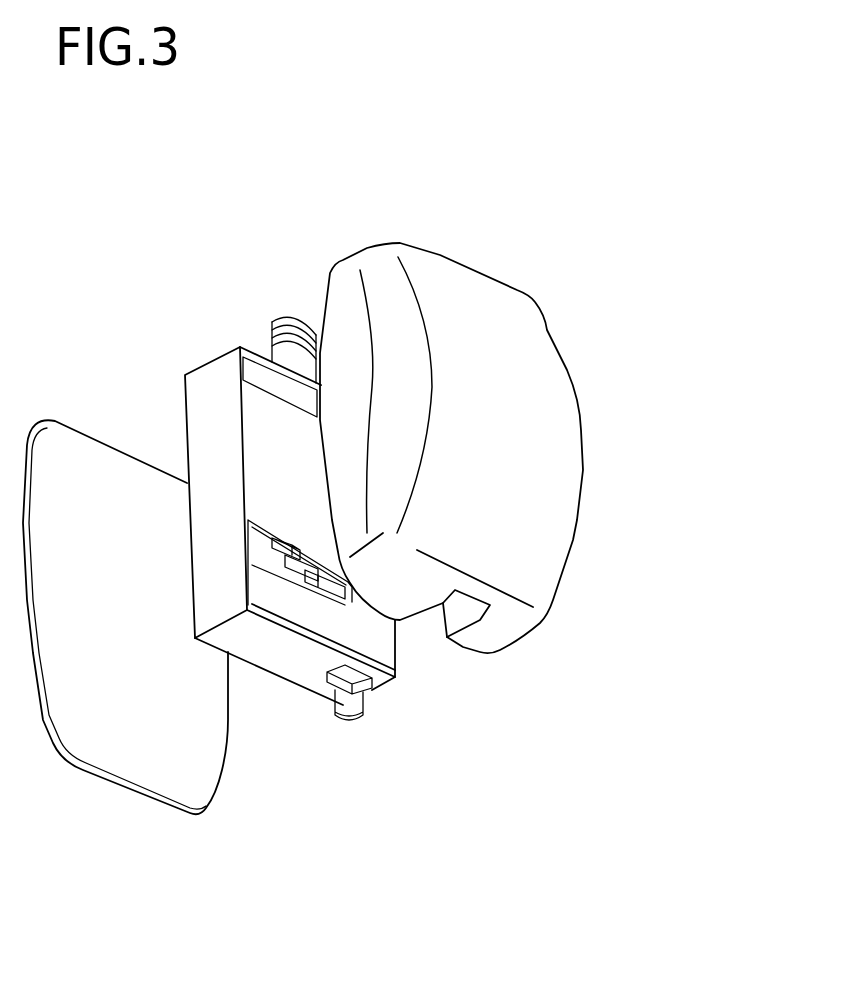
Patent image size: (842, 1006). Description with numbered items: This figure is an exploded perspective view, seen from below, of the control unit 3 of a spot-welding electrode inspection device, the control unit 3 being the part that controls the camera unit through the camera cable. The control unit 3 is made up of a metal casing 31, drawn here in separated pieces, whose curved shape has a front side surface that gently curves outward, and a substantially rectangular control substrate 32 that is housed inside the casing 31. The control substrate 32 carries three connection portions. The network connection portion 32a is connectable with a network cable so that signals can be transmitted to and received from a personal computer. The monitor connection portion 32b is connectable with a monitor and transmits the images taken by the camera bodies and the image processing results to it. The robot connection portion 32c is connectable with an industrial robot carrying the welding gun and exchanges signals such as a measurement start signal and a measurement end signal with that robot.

The control unit 3 is at (601, 158).
The casing 31 is at (117, 443).
The control substrate 32 is at (285, 588).
The network connection portion 32a is at (293, 565).
The monitor connection portion 32b is at (280, 553).
The robot connection portion 32c is at (348, 592).